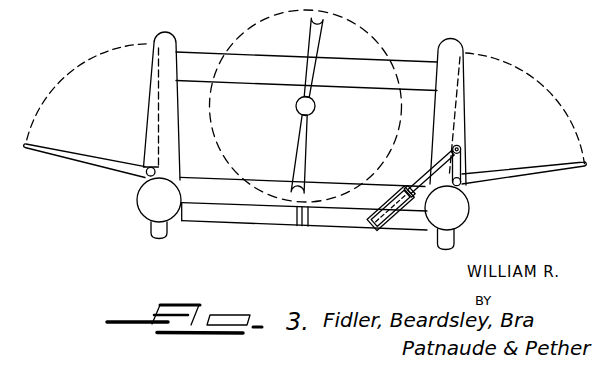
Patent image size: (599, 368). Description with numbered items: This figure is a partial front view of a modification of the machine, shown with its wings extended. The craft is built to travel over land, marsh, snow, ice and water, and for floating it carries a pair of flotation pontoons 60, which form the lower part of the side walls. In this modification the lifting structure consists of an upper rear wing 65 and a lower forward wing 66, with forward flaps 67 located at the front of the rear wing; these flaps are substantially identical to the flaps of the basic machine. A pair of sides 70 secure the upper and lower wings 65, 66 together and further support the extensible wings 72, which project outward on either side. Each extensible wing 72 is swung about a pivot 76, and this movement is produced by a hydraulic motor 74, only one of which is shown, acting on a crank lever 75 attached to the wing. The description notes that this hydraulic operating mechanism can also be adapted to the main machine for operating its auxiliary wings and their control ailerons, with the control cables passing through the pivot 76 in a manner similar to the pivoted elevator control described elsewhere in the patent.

The flotation pontoon 60 is at (140, 195).
The upper rear wing 65 is at (195, 57).
The lower forward wing 66 is at (227, 200).
The forward flap 67 is at (232, 222).
The side 70 is at (177, 135).
The extensible wing 72 is at (71, 146).
The hydraulic motor 74 is at (388, 190).
The crank lever 75 is at (461, 147).
The pivot 76 is at (462, 163).